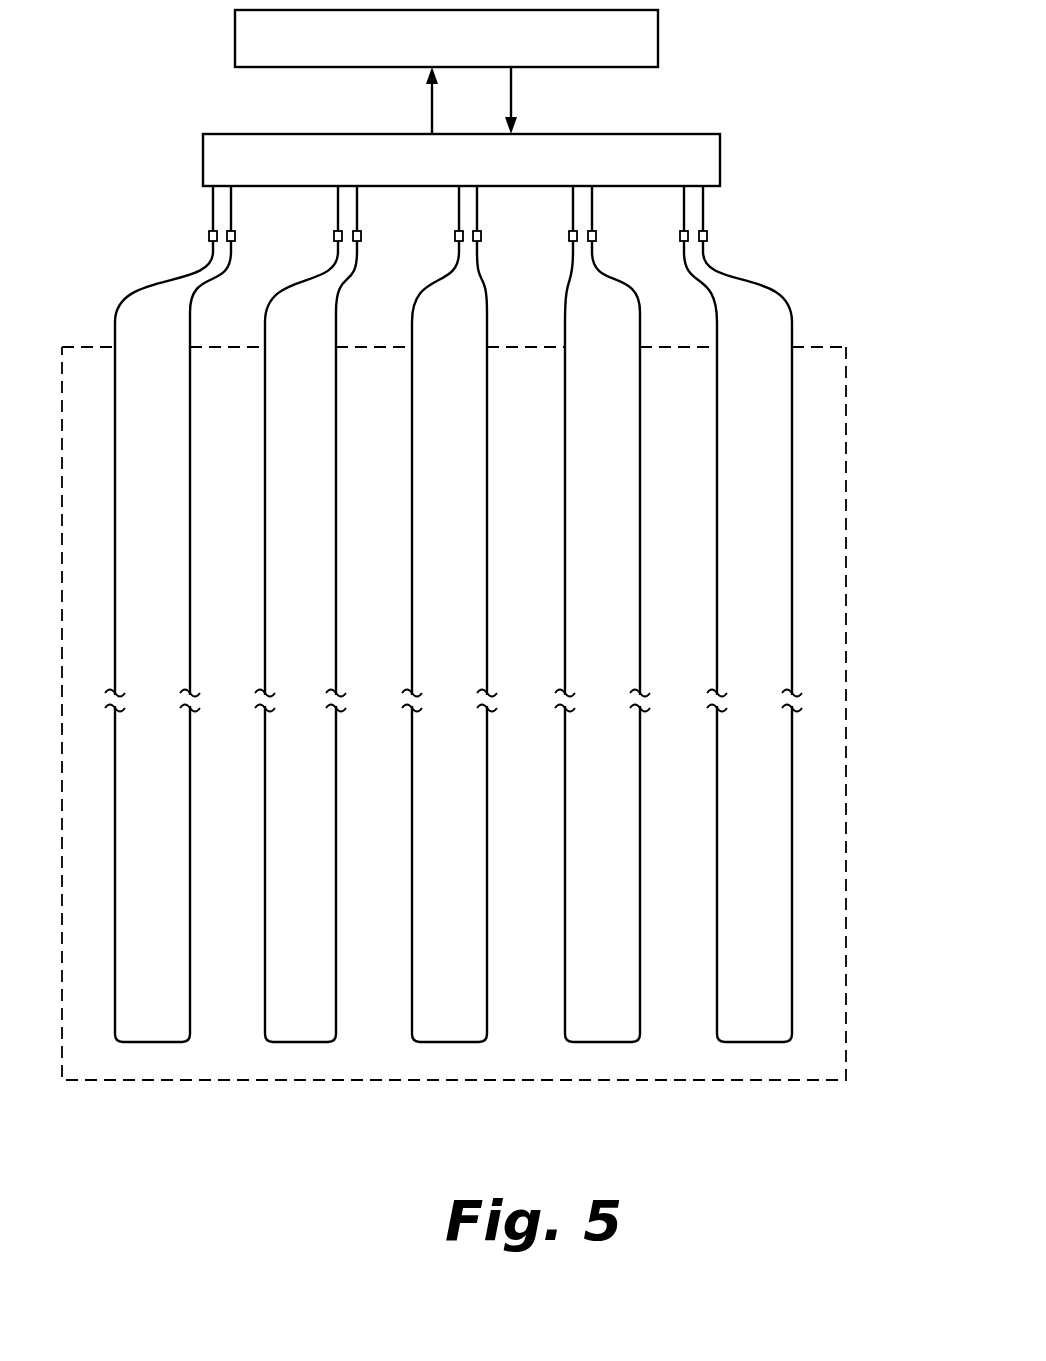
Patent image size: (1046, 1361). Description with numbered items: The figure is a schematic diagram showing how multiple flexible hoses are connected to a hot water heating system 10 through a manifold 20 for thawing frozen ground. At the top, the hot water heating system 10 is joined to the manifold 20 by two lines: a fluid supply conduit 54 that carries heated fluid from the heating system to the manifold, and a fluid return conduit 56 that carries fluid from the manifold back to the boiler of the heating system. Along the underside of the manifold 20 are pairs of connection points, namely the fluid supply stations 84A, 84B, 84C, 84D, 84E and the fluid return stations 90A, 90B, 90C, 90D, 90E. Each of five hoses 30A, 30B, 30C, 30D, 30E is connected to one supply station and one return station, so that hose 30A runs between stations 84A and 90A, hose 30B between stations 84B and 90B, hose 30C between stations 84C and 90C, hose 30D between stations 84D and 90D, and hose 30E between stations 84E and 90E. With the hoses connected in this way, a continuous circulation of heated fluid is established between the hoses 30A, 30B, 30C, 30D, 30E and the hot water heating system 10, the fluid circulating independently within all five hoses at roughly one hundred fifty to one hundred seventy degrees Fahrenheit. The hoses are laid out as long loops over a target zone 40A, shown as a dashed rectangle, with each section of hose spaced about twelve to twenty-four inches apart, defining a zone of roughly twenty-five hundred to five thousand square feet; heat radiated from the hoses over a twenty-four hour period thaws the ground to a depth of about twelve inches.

The hot water heating system 10 is at (659, 36).
The manifold 20 is at (721, 144).
The fluid supply conduit 54 is at (512, 91).
The fluid return conduit 56 is at (430, 102).
The hose 30A is at (114, 322).
The hose 30B is at (364, 420).
The hose 30C is at (488, 445).
The hose 30D is at (641, 436).
The hose 30E is at (793, 410).
The target zone 40A is at (846, 528).
The fluid supply station 84A is at (703, 237).
The fluid supply station 84B is at (592, 237).
The fluid supply station 84C is at (477, 237).
The fluid supply station 84D is at (357, 237).
The fluid supply station 84E is at (234, 236).
The fluid return station 90A is at (684, 241).
The fluid return station 90B is at (572, 241).
The fluid return station 90C is at (458, 241).
The fluid return station 90D is at (338, 241).
The fluid return station 90E is at (211, 232).